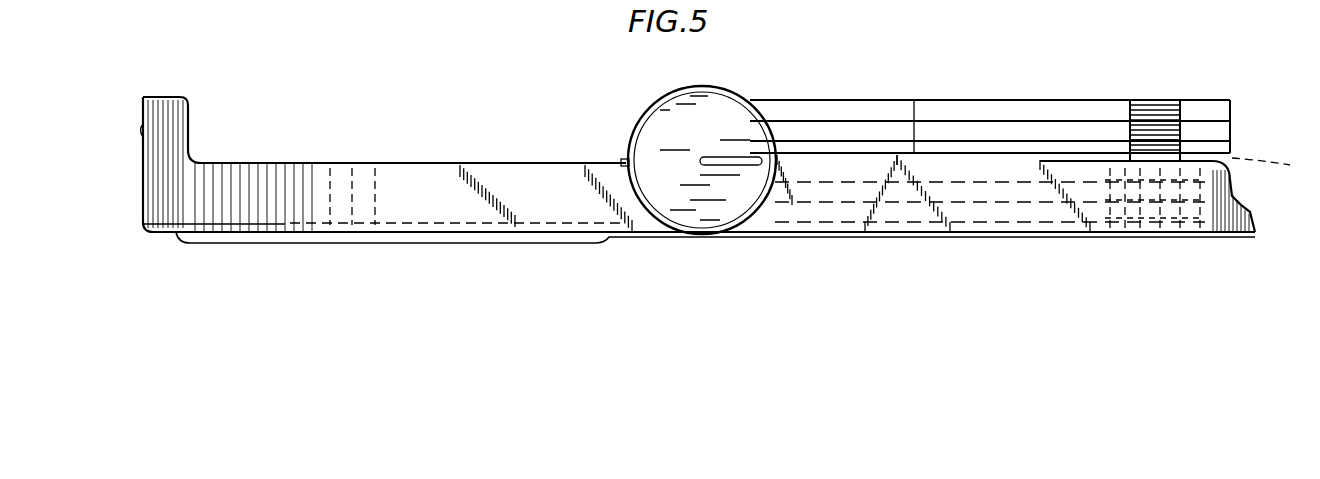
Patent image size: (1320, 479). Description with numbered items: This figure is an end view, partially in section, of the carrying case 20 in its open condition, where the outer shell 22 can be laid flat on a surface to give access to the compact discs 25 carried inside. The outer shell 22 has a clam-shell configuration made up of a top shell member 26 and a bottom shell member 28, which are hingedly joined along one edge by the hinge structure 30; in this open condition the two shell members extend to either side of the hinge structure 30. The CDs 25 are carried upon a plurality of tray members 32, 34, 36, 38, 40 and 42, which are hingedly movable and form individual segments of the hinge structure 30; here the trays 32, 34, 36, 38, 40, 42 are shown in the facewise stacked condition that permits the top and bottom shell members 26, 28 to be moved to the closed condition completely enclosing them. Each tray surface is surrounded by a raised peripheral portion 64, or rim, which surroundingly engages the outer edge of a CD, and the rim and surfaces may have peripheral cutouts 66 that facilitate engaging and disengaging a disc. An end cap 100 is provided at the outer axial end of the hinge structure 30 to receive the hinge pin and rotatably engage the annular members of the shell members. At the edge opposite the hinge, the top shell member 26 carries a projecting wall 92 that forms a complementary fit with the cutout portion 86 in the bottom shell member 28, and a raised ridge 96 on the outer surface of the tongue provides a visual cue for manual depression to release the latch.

The carrying case 20 is at (550, 95).
The outer shell 22 is at (628, 250).
The compact discs 25 is at (1140, 104).
The top shell member 26 is at (448, 240).
The bottom shell member 28 is at (915, 238).
The hinge structure 30 is at (620, 126).
The tray member 32 is at (1222, 112).
The tray member 34 is at (1222, 128).
The tray member 36 is at (1236, 146).
The tray member 38 is at (1275, 165).
The tray member 40 is at (1032, 195).
The tray member 42 is at (1095, 215).
The raised peripheral portion 64 is at (976, 108).
The peripheral cutouts 66 is at (1158, 108).
The cutout portion 86 is at (1248, 196).
The projecting wall 92 is at (176, 104).
The raised ridge 96 is at (141, 130).
The end caps 100 is at (719, 142).